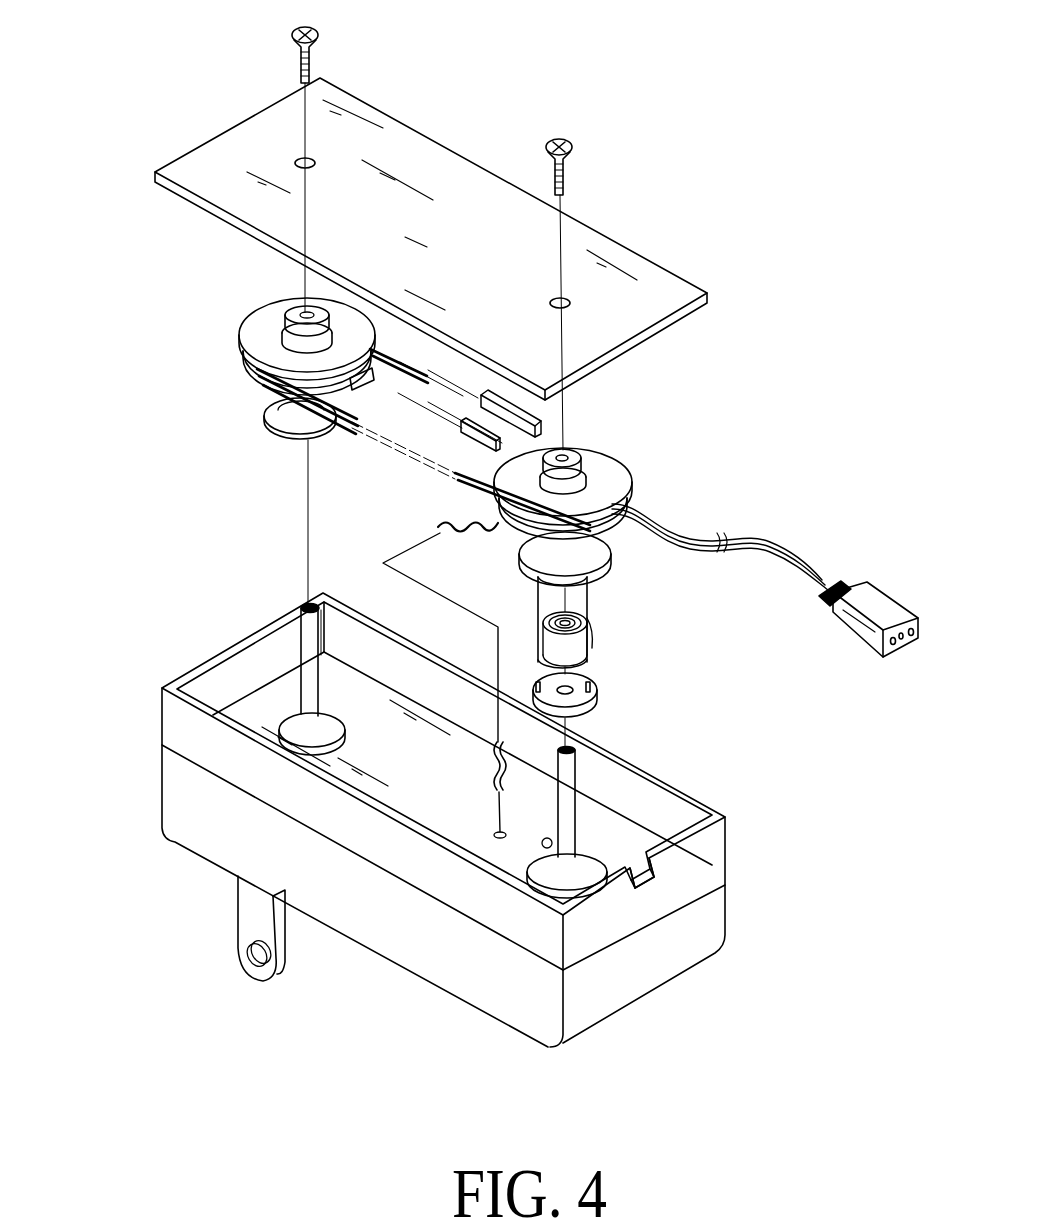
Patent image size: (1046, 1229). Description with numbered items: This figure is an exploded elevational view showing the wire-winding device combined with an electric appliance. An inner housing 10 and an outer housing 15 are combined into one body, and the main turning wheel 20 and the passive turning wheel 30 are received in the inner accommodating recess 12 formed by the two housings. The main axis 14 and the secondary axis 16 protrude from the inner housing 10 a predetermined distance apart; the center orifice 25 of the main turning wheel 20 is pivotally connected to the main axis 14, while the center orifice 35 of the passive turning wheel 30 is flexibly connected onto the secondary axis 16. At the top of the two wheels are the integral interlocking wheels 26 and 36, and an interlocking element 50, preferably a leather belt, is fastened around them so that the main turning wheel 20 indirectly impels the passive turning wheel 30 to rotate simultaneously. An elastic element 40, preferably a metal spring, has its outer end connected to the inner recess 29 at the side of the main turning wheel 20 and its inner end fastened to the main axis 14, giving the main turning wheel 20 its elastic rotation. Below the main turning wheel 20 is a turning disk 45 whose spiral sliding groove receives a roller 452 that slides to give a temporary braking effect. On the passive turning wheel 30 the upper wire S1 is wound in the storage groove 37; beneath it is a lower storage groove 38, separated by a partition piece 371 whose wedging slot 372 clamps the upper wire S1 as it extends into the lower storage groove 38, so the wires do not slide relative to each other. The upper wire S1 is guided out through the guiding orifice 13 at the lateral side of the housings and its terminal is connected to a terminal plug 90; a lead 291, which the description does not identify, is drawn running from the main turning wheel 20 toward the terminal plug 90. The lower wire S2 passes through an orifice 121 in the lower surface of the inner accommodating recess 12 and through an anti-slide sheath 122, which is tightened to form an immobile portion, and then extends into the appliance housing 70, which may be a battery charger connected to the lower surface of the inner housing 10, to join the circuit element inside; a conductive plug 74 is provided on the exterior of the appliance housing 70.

The outer housing 15 is at (432, 173).
The center orifice 35 is at (305, 312).
The interlocking wheel 36 is at (287, 330).
The passive turning wheel 30 is at (252, 338).
The storage groove 37 is at (243, 369).
The partition piece 371 is at (268, 401).
The lower storage groove 38 is at (285, 415).
The interlocking element 50 is at (268, 432).
The wedging slot 372 is at (360, 407).
The elastic element 40 is at (603, 432).
The main turning wheel 20 is at (585, 440).
The center orifice 25 is at (603, 440).
The interlocking wheel 26 is at (583, 462).
The inner recess 29 is at (523, 535).
The sensor wire 291 is at (622, 532).
The upper wire S1 is at (767, 548).
The terminal plug 90 is at (873, 597).
The lower wire S2 is at (440, 528).
The turning disk 45 is at (575, 698).
The secondary axis 16 is at (317, 635).
The main axis 14 is at (570, 782).
The inner housing 10 is at (687, 808).
The inner accommodating recess 12 is at (427, 797).
The guiding orifice 13 is at (663, 860).
The conductive plug 74 is at (255, 927).
The orifice 121 is at (493, 772).
The anti-slide sheath 122 is at (500, 835).
The roller 452 is at (547, 842).
The appliance housing 70 is at (632, 960).